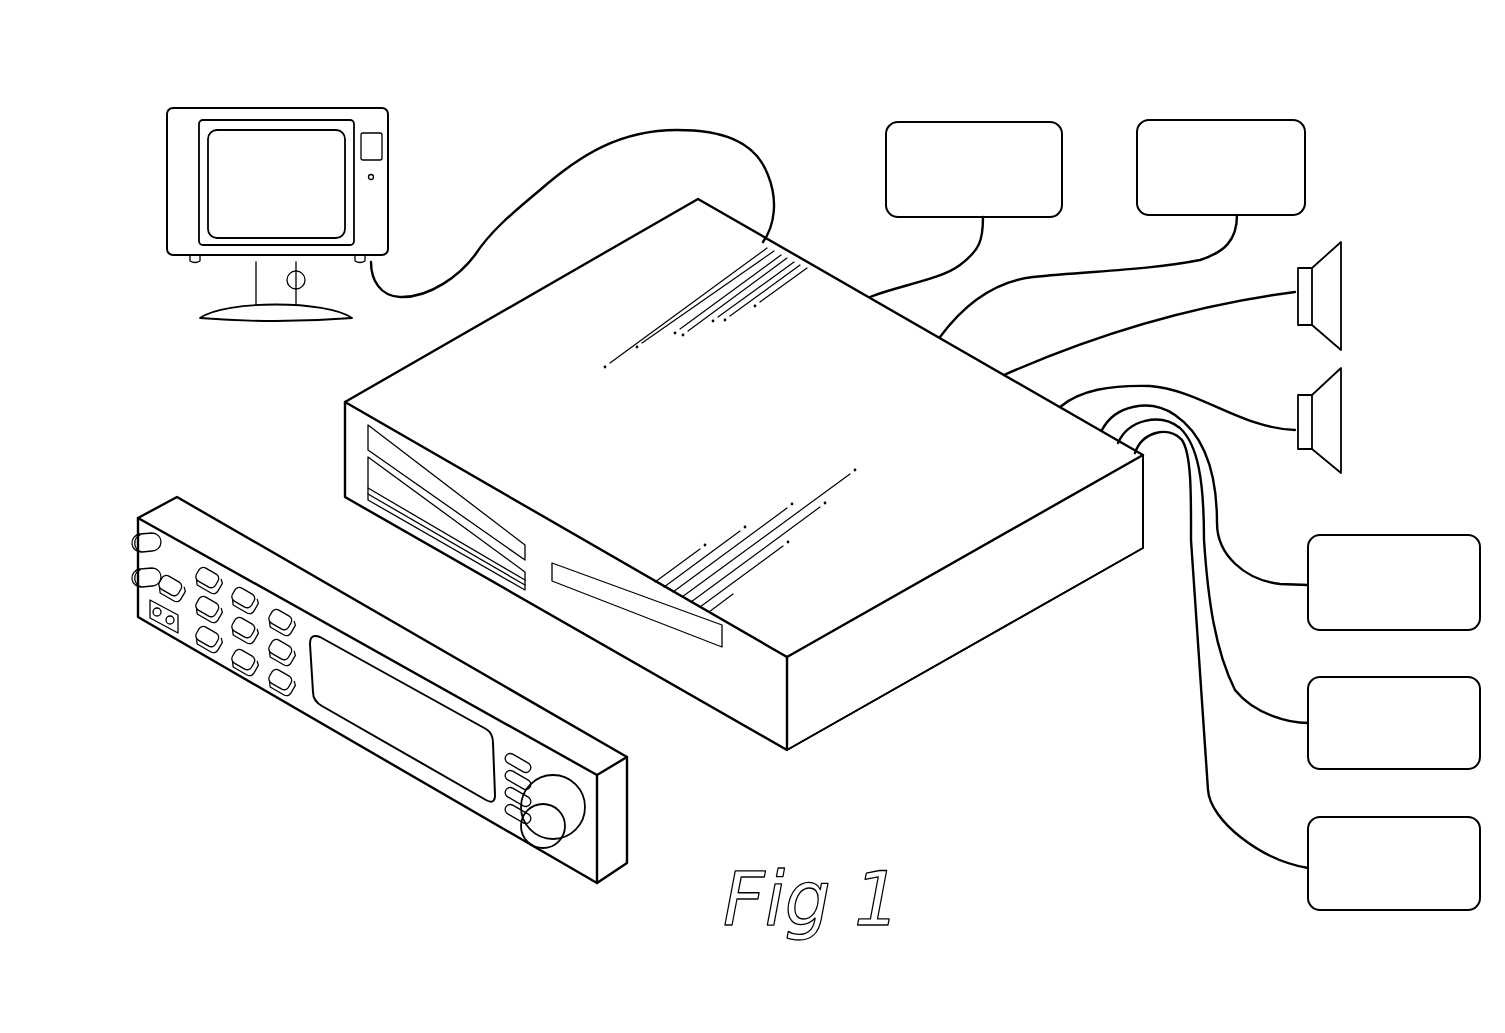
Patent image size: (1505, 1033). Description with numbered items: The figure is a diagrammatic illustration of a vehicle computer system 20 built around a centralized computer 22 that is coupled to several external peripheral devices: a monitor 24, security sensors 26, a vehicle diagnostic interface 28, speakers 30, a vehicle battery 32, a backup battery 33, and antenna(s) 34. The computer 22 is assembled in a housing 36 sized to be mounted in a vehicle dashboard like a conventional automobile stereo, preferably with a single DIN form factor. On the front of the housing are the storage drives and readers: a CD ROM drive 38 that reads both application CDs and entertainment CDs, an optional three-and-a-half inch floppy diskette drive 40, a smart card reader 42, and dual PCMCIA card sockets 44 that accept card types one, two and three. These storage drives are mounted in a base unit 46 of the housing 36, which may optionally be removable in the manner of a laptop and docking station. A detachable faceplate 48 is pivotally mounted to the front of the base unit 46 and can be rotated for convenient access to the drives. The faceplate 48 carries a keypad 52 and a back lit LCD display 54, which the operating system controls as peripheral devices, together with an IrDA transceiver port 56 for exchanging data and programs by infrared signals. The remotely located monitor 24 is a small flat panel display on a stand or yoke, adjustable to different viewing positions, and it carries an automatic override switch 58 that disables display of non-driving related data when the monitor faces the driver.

The vehicle computer system 20 is at (240, 450).
The centralized computer 22 is at (898, 818).
The monitor 24 is at (285, 110).
The security sensors 26 is at (1022, 130).
The vehicle diagnostic interface 28 is at (1264, 130).
The speakers 30 is at (1327, 425).
The vehicle battery 32 is at (1438, 541).
The backup battery 33 is at (1438, 683).
The antenna(s) 34 is at (1438, 823).
The housing 36 is at (890, 695).
The CD ROM drive 38 is at (382, 442).
The floppy diskette drive 40 is at (390, 480).
The smart card reader 42 is at (728, 658).
The dual PCMCIA card sockets 44 is at (455, 545).
The base unit 46 is at (1050, 583).
The faceplate 48 is at (345, 745).
The keypad 52 is at (235, 668).
The display 54 is at (460, 767).
The IrDA transceiver port 56 is at (150, 622).
The automatic override switch 58 is at (305, 275).